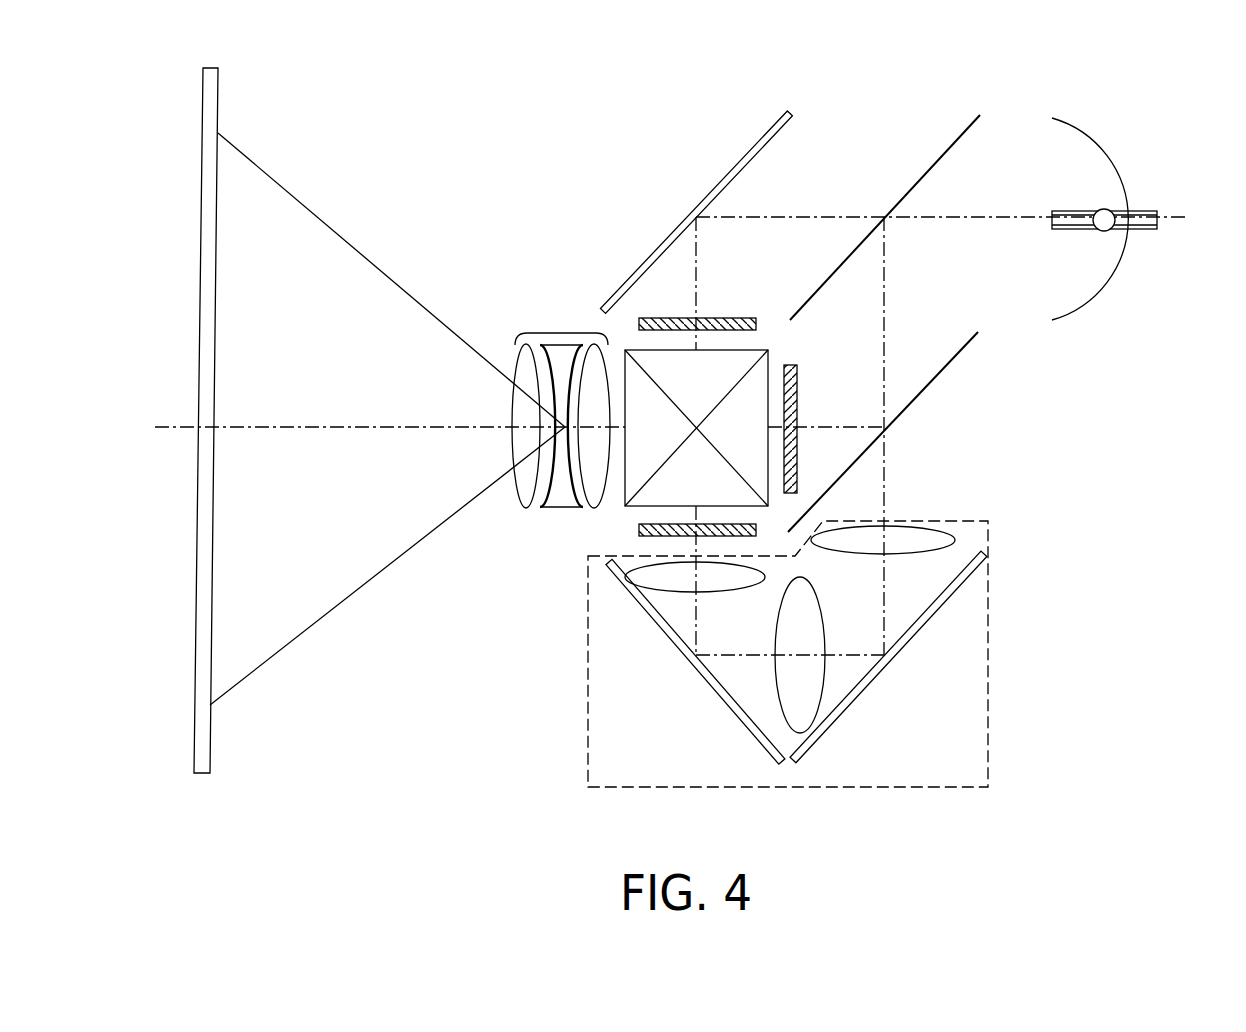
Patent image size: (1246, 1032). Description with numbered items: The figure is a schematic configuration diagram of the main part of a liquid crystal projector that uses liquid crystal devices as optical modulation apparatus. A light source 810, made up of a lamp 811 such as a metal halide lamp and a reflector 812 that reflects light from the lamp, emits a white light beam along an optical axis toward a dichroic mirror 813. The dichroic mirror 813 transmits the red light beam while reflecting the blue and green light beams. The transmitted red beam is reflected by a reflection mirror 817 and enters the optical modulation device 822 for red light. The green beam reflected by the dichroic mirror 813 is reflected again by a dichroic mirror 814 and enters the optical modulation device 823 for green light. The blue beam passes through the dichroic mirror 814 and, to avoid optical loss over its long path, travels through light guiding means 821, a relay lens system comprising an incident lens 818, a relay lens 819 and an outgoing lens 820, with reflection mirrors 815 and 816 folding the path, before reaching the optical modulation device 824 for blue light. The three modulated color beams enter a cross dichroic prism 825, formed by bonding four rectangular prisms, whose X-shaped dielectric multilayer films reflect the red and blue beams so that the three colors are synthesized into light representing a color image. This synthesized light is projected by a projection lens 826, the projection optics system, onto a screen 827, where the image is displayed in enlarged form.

The light source 810 is at (1137, 185).
The lamp 811 is at (1107, 208).
The reflector 812 is at (1108, 278).
The dichroic mirror 813 is at (937, 161).
The dichroic mirror 814 is at (940, 370).
The reflection mirror 815 is at (933, 607).
The reflection mirror 816 is at (733, 715).
The reflection mirror 817 is at (723, 170).
The incident lens 818 is at (913, 533).
The relay lens 819 is at (810, 675).
The outgoing lens 820 is at (653, 575).
The light guiding means 821 is at (806, 617).
The optical modulation device 822 is at (757, 324).
The optical modulation device 823 is at (800, 390).
The optical modulation device 824 is at (633, 532).
The cross dichroic prism 825 is at (645, 465).
The projection lens 826 is at (557, 333).
The screen 827 is at (212, 655).